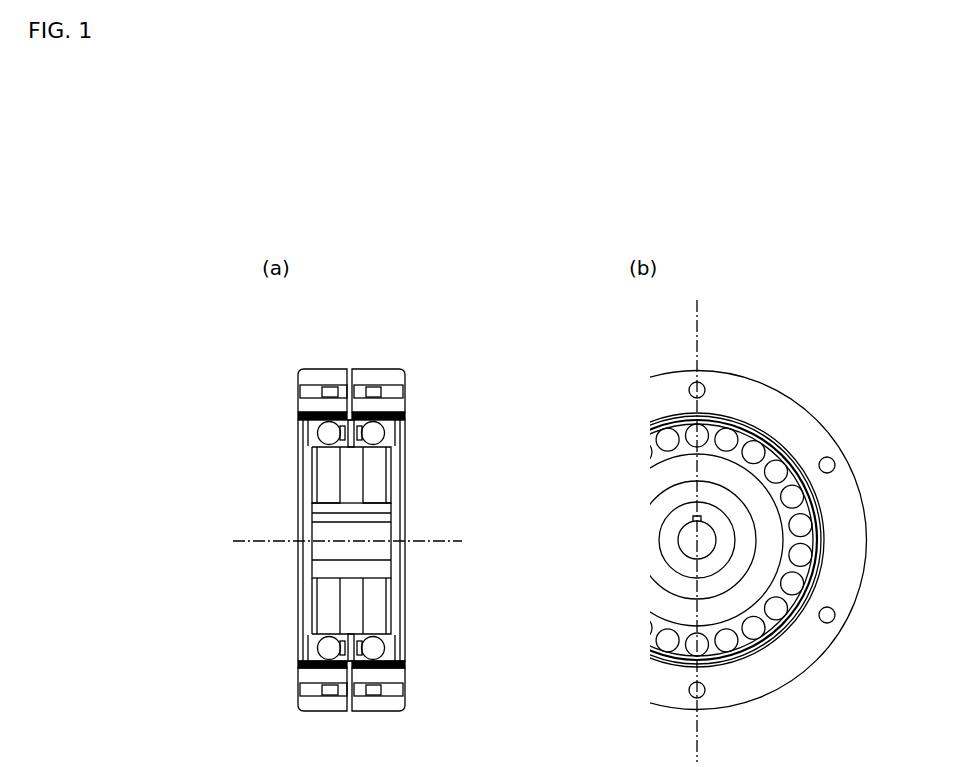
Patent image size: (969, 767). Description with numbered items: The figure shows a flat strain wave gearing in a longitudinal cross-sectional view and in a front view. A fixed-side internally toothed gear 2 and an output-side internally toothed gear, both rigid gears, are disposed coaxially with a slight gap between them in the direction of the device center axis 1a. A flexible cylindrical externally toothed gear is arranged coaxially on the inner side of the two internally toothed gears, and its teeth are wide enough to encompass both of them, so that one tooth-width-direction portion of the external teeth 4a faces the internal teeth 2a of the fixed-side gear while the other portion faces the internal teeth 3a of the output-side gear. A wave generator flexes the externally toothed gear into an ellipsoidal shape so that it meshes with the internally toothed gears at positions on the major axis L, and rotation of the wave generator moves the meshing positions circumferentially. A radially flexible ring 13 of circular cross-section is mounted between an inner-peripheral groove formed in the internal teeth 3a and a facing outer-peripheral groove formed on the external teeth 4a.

The device center axis 1a is at (233, 543).
The fixed-side internally toothed gear 2 is at (295, 369).
The internal teeth 2a is at (324, 411).
The internal teeth 3a is at (363, 411).
The external teeth 4a is at (313, 429).
The radially flexible ring 13 is at (388, 415).
The major axis L is at (698, 316).